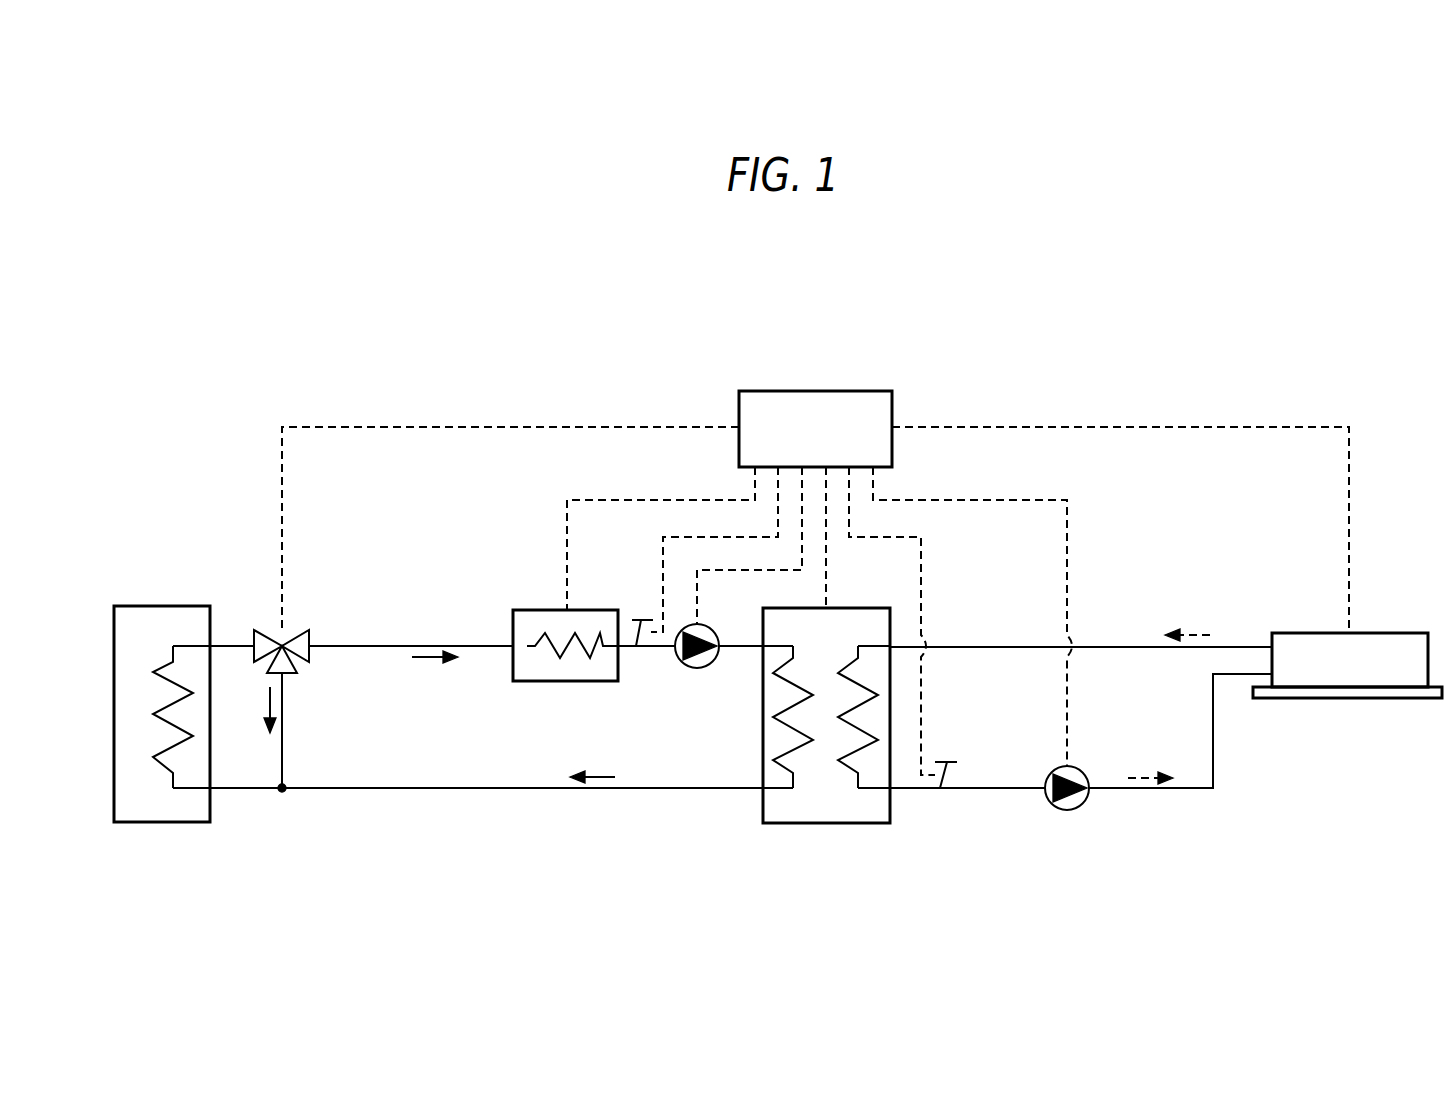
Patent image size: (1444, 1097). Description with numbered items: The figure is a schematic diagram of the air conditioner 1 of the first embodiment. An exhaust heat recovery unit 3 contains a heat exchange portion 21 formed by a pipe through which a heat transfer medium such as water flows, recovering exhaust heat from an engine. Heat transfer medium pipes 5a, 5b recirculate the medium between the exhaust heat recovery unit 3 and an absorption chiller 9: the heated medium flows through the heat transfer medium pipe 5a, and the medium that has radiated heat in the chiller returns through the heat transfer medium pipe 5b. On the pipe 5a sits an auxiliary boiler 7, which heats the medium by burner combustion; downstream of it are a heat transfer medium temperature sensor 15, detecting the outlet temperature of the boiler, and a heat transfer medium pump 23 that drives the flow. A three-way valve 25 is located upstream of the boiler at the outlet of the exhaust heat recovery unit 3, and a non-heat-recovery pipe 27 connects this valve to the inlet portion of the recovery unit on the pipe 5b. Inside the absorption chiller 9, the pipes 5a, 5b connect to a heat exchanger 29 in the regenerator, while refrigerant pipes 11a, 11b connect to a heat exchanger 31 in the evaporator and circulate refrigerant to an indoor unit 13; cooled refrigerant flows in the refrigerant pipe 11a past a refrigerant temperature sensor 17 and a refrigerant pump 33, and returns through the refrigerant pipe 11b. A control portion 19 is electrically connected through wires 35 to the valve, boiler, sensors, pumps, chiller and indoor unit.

The air conditioner 1 is at (1095, 345).
The exhaust heat recovery unit 3 is at (168, 606).
The heat transfer medium pipe 5a is at (420, 646).
The heat transfer medium pipe 5b is at (420, 788).
The auxiliary boiler 7 is at (540, 610).
The absorption chiller 9 is at (827, 823).
The refrigerant pipe 11a is at (993, 788).
The refrigerant pipe 11b is at (1112, 647).
The indoor unit 13 is at (1388, 633).
The heat transfer medium temperature sensor 15 is at (651, 620).
The refrigerant temperature sensor 17 is at (948, 760).
The control portion 19 is at (815, 391).
The heat exchange portion 21 is at (162, 665).
The heat transfer medium pump 23 is at (698, 668).
The three-way valve 25 is at (310, 650).
The non-heat-recovery pipe 27 is at (285, 713).
The heat exchanger 29 is at (800, 765).
The heat exchanger 31 is at (847, 667).
The refrigerant pump 33 is at (1083, 768).
The wires 35 is at (510, 425).